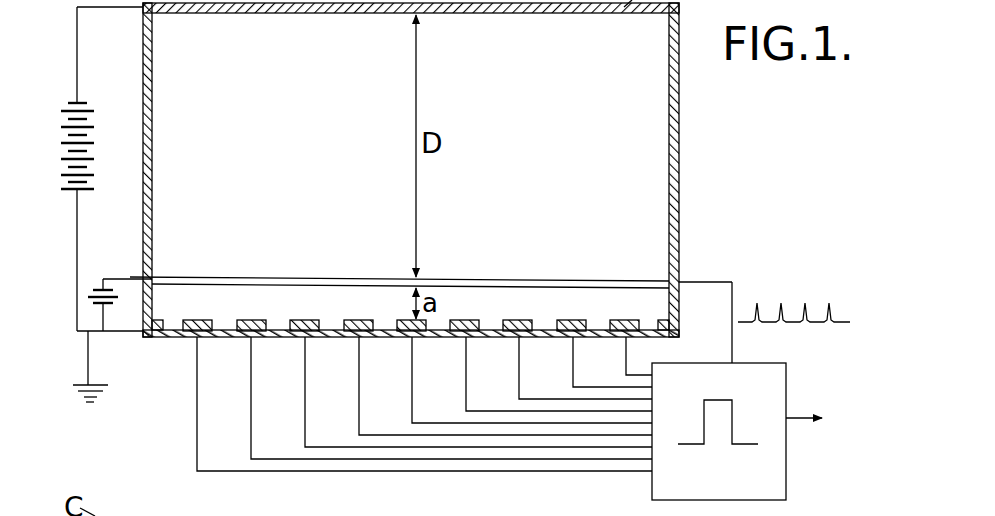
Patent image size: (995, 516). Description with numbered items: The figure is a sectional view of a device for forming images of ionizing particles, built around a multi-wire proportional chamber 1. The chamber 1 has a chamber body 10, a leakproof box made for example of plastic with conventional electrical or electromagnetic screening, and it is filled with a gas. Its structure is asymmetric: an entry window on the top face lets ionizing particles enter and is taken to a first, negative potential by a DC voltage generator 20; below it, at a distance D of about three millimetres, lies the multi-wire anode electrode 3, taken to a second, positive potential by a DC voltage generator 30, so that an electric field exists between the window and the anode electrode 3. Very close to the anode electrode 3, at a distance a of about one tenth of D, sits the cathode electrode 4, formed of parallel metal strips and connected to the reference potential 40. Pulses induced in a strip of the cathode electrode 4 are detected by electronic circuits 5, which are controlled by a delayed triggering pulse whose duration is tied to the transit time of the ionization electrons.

The multi-wire proportional chamber 1 is at (441, 168).
The chamber body 10 is at (679, 196).
The multi-wire anode electrode 3 is at (638, 280).
The cathode electrode 4 is at (186, 331).
The electronic circuits 5 is at (767, 471).
The DC voltage generator 20 is at (75, 150).
The DC voltage generator 30 is at (92, 296).
The reference potential 40 is at (86, 389).